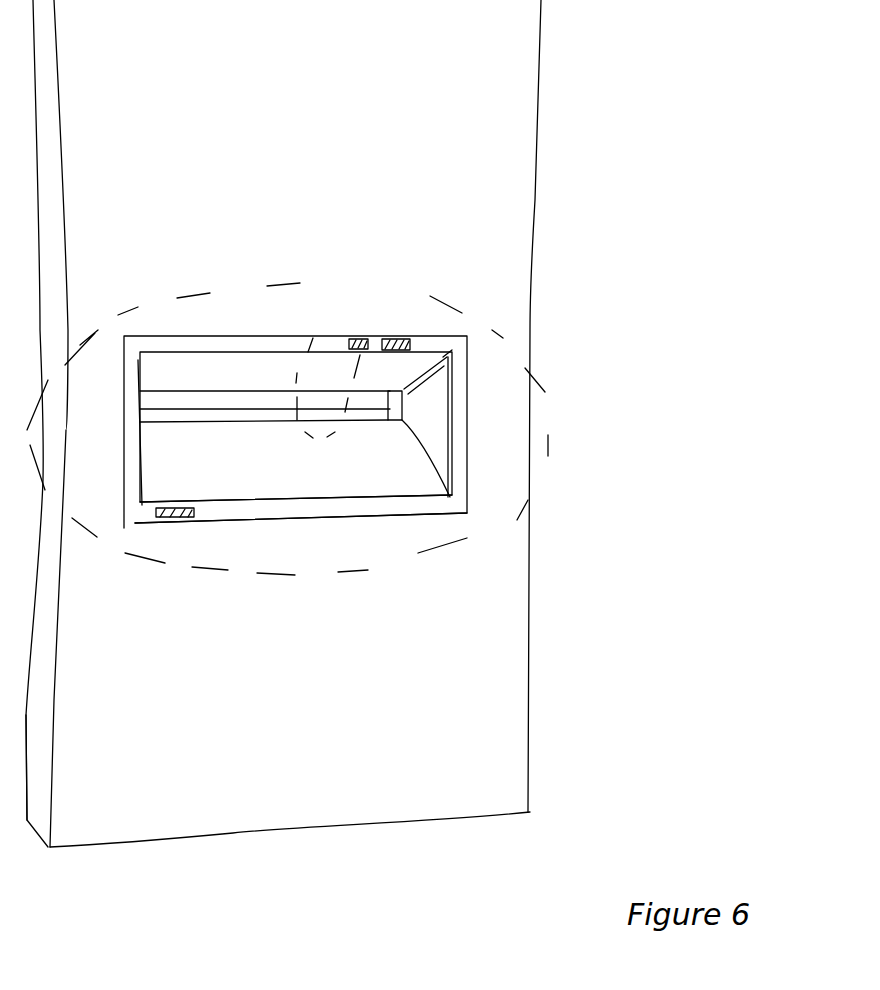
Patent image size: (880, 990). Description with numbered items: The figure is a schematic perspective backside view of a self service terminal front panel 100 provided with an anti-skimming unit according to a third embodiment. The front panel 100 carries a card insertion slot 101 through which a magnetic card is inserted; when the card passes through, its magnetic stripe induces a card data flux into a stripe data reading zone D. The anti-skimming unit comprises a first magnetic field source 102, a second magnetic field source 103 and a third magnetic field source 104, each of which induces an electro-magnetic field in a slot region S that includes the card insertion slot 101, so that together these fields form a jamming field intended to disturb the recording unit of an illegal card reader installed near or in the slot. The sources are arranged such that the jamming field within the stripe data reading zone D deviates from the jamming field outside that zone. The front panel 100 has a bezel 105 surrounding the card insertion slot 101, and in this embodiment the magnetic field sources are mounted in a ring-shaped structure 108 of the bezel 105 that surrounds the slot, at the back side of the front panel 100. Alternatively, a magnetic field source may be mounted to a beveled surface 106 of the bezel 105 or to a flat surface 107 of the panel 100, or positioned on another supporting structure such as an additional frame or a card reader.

The front panel 100 is at (726, 186).
The card insertion slot 101 is at (201, 405).
The first magnetic field source 102 is at (350, 337).
The second magnetic field source 103 is at (415, 337).
The third magnetic field source 104 is at (175, 520).
The bezel 105 is at (425, 483).
The beveled surface 106 is at (340, 478).
The flat surface 107 is at (515, 473).
The ring-shaped structure 108 is at (252, 520).
The stripe data reading zone D is at (325, 322).
The slot region S is at (343, 543).